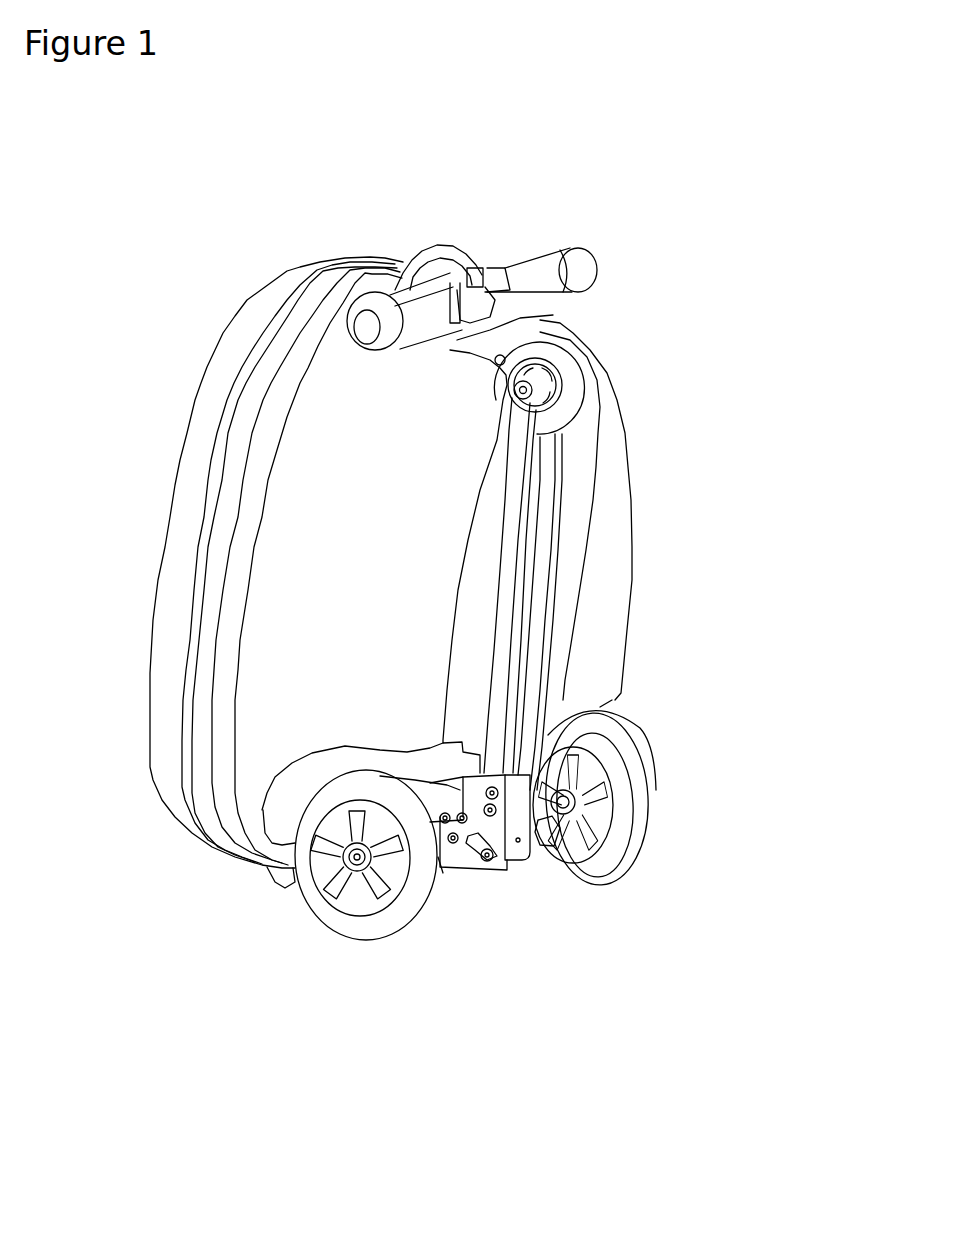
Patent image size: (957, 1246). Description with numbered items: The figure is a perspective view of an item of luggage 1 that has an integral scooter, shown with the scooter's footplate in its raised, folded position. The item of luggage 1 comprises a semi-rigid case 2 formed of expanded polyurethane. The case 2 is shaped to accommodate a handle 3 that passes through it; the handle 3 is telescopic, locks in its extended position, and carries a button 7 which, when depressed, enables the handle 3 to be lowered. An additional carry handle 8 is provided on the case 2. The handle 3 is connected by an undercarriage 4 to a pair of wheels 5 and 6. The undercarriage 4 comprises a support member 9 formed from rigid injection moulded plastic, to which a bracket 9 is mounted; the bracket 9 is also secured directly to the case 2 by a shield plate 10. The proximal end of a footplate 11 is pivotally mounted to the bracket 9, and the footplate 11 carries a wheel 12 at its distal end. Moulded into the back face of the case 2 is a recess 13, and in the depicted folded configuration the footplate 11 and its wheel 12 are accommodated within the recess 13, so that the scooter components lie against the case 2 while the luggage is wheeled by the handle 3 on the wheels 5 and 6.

The item of luggage 1 is at (683, 272).
The semi-rigid case 2 is at (632, 568).
The handle 3 is at (542, 272).
The undercarriage 4 is at (547, 830).
The wheel 5 is at (333, 902).
The wheel 6 is at (573, 843).
The button 7 is at (478, 273).
The carry handle 8 is at (438, 251).
The support member and bracket 9 is at (457, 858).
The shield plate 10 is at (447, 862).
The footplate 11 is at (522, 636).
The wheel 12 is at (540, 388).
The recess 13 is at (560, 690).